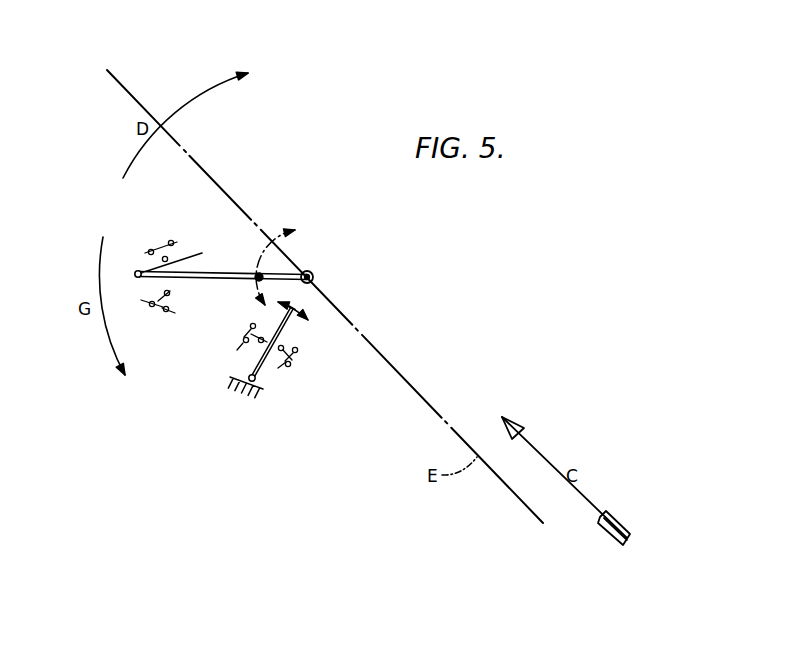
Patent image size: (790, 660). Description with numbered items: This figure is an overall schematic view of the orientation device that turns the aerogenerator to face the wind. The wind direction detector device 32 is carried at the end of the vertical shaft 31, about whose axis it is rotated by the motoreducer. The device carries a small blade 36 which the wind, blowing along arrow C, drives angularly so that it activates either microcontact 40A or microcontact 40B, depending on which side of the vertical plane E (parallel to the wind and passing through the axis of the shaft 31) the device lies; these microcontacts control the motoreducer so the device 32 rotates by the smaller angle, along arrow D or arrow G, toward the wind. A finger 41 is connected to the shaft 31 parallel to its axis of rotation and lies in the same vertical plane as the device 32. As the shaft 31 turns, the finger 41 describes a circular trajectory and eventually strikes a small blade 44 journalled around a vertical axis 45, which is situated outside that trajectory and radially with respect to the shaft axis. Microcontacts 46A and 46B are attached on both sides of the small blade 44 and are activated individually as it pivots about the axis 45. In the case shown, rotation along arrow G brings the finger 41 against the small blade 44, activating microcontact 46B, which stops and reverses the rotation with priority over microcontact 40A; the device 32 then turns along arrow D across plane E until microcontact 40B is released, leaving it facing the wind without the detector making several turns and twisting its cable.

The vertical shaft 31 is at (313, 272).
The wind direction detector device 32 is at (128, 264).
The small blade 36 is at (168, 257).
The microcontact 40A is at (139, 253).
The microcontact 40B is at (157, 313).
The finger 41 is at (258, 271).
The small blade 44 is at (261, 364).
The vertical axis 45 is at (255, 381).
The microcontact 46A is at (227, 345).
The microcontact 46B is at (293, 369).